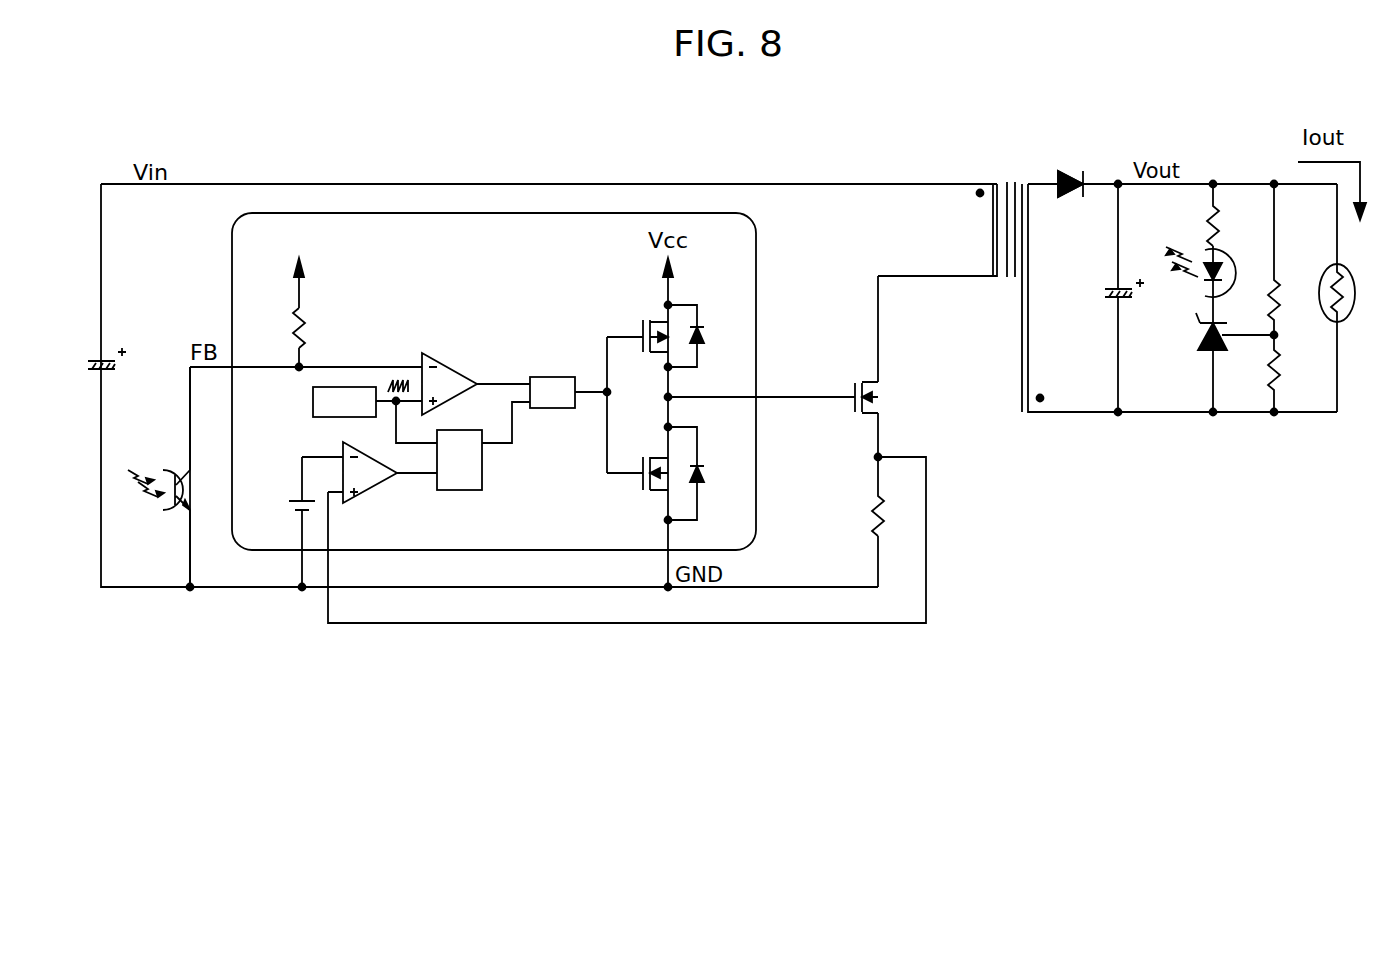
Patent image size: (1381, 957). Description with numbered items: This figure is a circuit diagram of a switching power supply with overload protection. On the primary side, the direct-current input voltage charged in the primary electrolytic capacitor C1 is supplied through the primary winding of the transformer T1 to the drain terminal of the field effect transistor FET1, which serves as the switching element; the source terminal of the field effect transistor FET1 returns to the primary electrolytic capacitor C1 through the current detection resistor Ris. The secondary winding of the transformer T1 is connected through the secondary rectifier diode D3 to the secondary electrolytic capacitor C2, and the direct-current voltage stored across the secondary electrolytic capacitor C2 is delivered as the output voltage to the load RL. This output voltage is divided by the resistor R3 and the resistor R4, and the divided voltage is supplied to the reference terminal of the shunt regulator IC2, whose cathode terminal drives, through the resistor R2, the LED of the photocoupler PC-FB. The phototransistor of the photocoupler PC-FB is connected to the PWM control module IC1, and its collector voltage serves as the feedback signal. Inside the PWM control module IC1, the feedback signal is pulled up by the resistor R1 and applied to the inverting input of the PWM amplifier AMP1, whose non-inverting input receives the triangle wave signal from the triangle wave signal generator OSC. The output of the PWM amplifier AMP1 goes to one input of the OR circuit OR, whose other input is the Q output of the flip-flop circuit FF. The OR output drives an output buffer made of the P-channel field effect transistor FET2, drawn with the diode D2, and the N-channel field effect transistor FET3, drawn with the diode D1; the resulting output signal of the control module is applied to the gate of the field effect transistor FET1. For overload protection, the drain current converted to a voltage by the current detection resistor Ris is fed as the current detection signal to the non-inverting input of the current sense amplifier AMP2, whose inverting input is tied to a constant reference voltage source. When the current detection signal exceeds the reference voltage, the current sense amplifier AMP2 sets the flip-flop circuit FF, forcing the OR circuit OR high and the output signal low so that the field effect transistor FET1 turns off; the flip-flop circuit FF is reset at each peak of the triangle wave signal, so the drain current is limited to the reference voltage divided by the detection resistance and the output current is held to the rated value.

The primary electrolytic capacitor C1 is at (89, 362).
The photocoupler PC-FB is at (677, 408).
The PWM control module IC1 is at (470, 381).
The resistor R1 is at (310, 297).
The triangle wave signal generator OSC is at (375, 411).
The PWM amplifier AMP1 is at (476, 377).
The OR circuit OR is at (586, 405).
The flip-flop circuit FF is at (483, 446).
The current sense amplifier AMP2 is at (584, 532).
The field effect transistor FET2 is at (627, 331).
The diode D2 is at (702, 336).
The field effect transistor FET3 is at (627, 483).
The diode D1 is at (702, 473).
The field effect transistor FET1 is at (773, 366).
The current detection resistor Ris is at (859, 521).
The transformer T1 is at (1107, 284).
The secondary rectifier diode D3 is at (1197, 198).
The secondary electrolytic capacitor C2 is at (1108, 298).
The resistor R2 is at (1232, 215).
The shunt regulator IC2 is at (1216, 362).
The resistor R3 is at (1254, 259).
The resistor R4 is at (1256, 373).
The load RL is at (1323, 298).